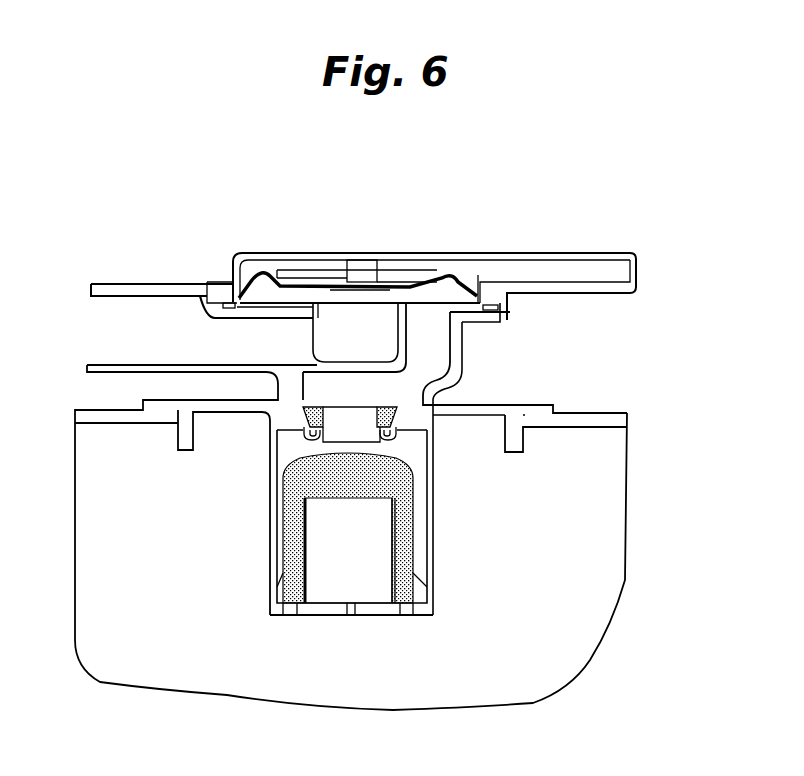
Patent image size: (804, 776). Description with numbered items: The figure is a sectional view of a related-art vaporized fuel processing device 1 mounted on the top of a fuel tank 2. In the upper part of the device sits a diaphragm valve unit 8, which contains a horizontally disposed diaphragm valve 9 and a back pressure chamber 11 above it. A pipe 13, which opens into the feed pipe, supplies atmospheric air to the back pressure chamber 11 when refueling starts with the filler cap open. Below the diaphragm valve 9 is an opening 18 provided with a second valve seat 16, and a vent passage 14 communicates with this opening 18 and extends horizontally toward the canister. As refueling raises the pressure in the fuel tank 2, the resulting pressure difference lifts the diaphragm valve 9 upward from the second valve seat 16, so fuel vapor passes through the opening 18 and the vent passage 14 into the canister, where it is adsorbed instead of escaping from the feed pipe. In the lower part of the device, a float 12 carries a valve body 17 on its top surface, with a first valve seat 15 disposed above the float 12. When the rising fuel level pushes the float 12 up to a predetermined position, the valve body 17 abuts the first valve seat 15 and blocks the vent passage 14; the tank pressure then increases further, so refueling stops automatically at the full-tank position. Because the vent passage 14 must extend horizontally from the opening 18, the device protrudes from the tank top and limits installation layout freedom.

The vaporized fuel processing device 1 is at (201, 277).
The fuel tank 2 is at (583, 418).
The diaphragm valve unit 8 is at (262, 252).
The diaphragm valve 9 is at (312, 272).
The back pressure chamber 11 is at (385, 264).
The float 12 is at (433, 556).
The pipe 13 is at (594, 257).
The vent passage 14 is at (104, 283).
The first valve seat 15 is at (318, 433).
The second valve seat 16 is at (407, 301).
The valve body 17 is at (381, 457).
The opening 18 is at (360, 307).